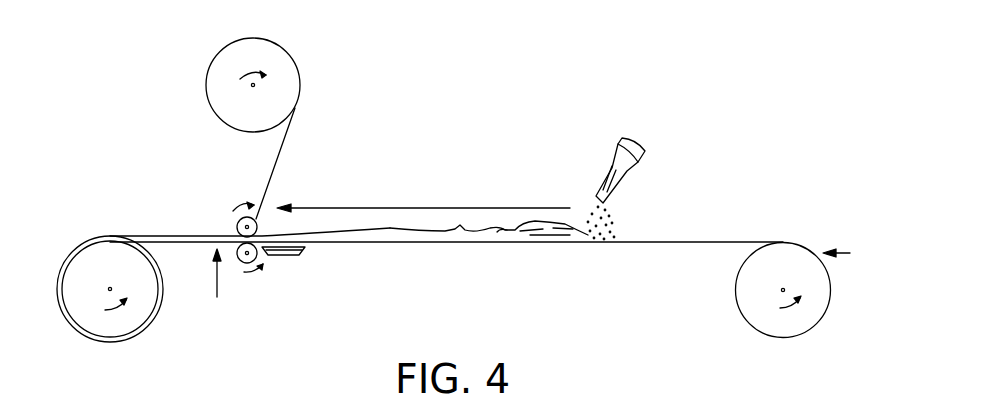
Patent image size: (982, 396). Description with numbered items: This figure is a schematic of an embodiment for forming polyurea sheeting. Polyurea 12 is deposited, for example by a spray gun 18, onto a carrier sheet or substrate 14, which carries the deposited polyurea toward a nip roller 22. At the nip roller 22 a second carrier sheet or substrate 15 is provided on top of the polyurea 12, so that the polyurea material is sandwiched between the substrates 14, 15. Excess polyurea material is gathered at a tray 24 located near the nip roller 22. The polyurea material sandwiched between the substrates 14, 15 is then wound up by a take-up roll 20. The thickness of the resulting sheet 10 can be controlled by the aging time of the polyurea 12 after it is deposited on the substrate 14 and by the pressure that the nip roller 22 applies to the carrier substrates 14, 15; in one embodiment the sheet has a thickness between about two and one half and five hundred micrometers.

The sheet 10 is at (160, 233).
The polyurea 12 is at (443, 227).
The carrier sheet or substrate 14 is at (738, 238).
The second carrier sheet or substrate 15 is at (280, 152).
The spray gun 18 is at (633, 166).
The take-up roll 20 is at (141, 311).
The nip roller 22 is at (236, 222).
The tray 24 is at (292, 264).